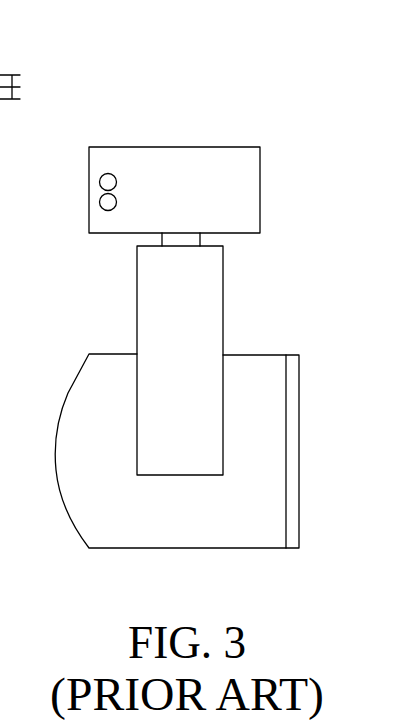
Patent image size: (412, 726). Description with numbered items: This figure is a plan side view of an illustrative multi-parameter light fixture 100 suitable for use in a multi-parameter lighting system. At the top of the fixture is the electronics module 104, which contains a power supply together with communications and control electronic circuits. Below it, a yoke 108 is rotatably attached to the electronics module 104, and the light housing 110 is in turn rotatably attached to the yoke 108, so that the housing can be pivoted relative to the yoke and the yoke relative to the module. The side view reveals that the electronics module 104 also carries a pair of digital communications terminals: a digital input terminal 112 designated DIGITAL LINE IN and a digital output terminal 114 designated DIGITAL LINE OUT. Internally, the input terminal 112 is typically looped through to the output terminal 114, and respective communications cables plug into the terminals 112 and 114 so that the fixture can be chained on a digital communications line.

The light fixture 100 is at (160, 132).
The electronics module 104 is at (260, 190).
The yoke 108 is at (223, 275).
The light housing 110 is at (252, 355).
The digital input terminal 112 is at (100, 178).
The digital output terminal 114 is at (99, 208).